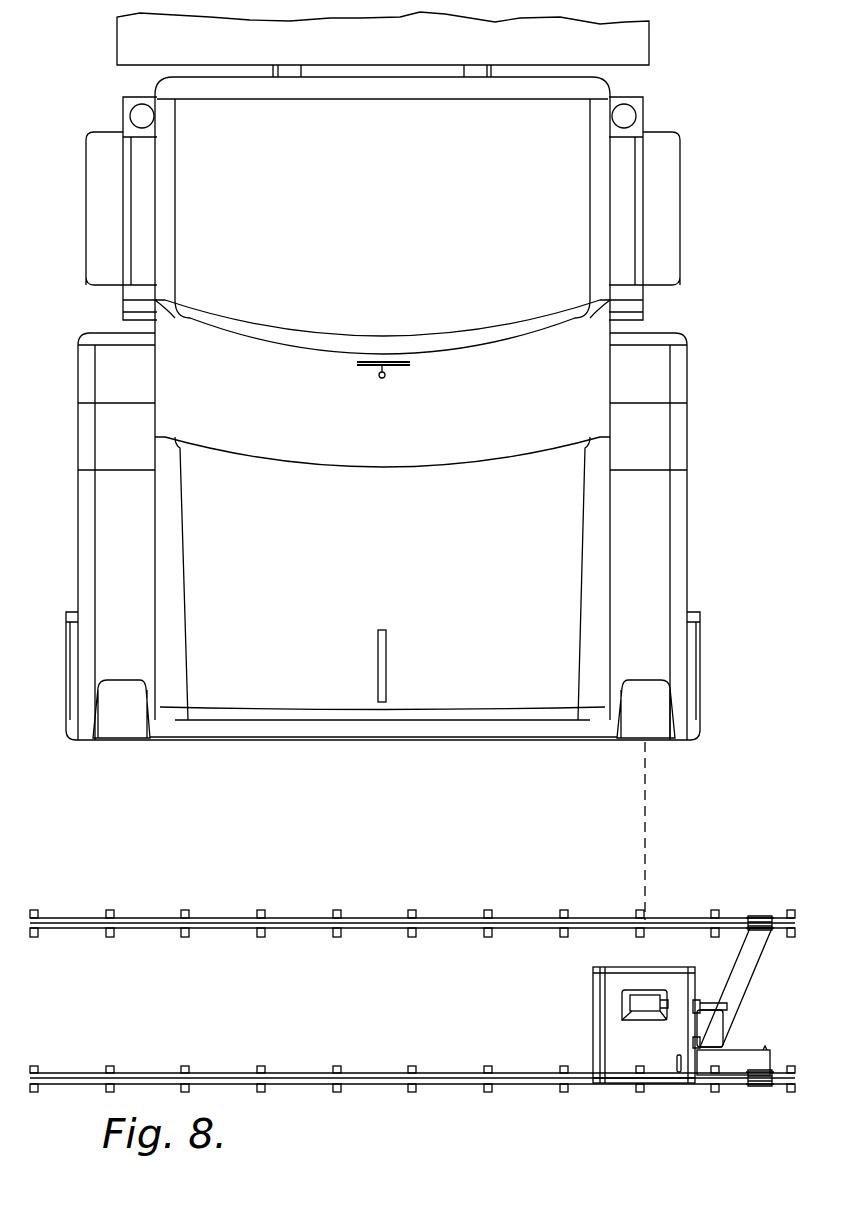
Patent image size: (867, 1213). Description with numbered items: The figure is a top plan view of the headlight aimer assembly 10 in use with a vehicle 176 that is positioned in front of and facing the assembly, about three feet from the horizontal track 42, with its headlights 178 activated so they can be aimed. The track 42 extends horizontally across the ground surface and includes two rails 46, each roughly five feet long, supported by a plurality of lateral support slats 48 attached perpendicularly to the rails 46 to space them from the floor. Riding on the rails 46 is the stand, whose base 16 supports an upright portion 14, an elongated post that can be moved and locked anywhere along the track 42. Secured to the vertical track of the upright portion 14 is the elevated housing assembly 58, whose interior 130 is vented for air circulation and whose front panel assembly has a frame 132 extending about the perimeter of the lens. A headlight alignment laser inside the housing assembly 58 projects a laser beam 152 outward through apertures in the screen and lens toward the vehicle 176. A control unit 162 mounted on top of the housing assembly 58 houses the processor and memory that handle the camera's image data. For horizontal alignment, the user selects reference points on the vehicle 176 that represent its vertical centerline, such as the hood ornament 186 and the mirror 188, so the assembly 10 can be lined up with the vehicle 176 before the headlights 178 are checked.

The headlight aimer assembly 10 is at (661, 1040).
The upright portion 14 is at (710, 1027).
The base 16 is at (760, 988).
The track 42 is at (412, 1009).
The rails 46 is at (297, 928).
The lateral support slats 48 is at (36, 937).
The housing assembly 58 is at (627, 1065).
The interior 130 is at (727, 1063).
The frame 132 is at (743, 957).
The laser beam 152 is at (646, 835).
The control unit 162 is at (612, 1006).
The vehicle 176 is at (360, 409).
The headlights 178 is at (122, 738).
The hood ornament 186 is at (386, 690).
The mirror 188 is at (386, 377).